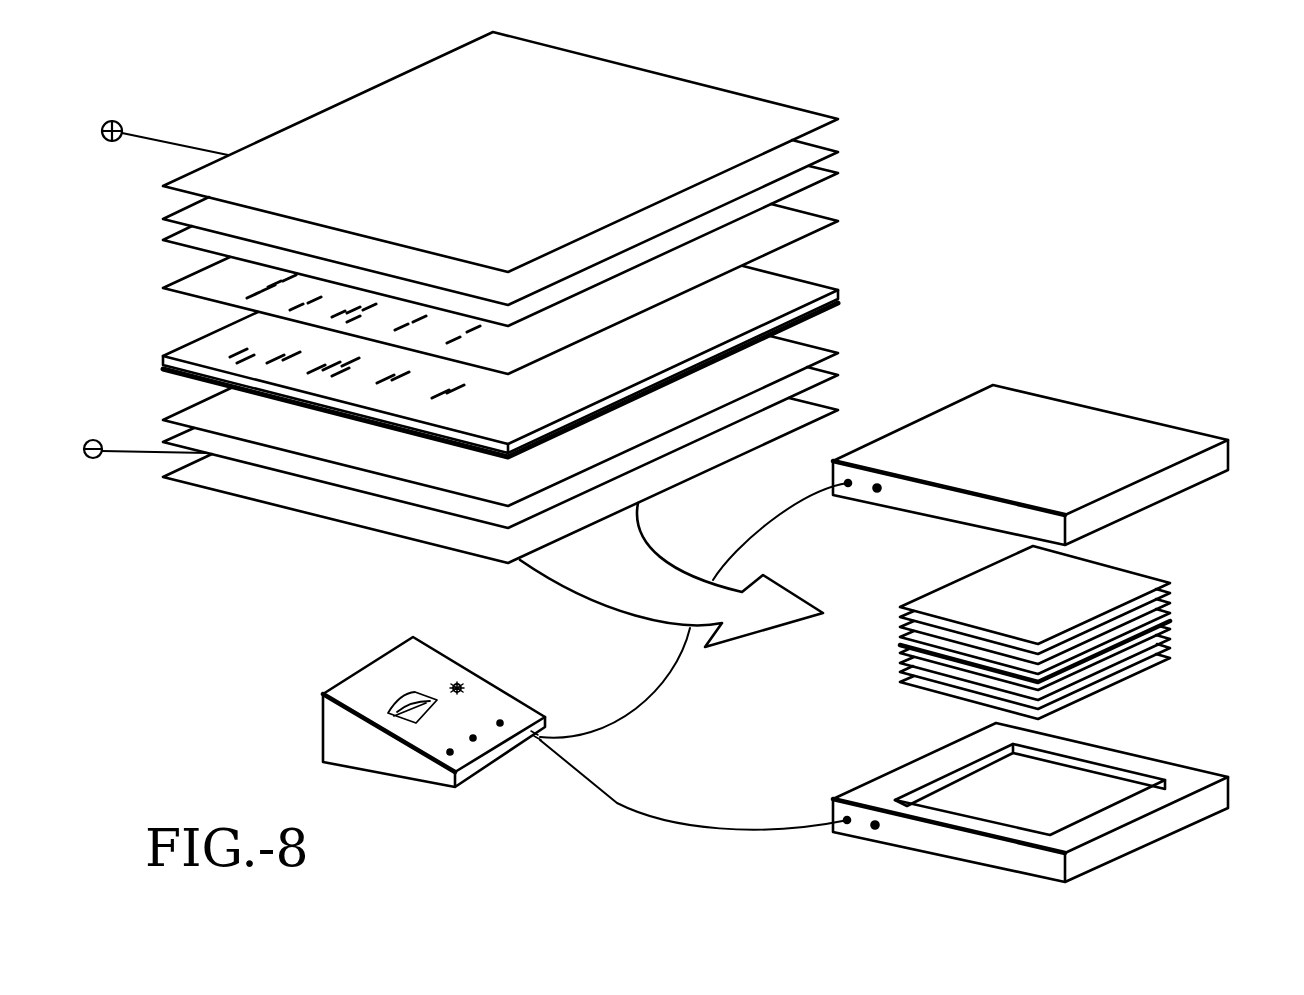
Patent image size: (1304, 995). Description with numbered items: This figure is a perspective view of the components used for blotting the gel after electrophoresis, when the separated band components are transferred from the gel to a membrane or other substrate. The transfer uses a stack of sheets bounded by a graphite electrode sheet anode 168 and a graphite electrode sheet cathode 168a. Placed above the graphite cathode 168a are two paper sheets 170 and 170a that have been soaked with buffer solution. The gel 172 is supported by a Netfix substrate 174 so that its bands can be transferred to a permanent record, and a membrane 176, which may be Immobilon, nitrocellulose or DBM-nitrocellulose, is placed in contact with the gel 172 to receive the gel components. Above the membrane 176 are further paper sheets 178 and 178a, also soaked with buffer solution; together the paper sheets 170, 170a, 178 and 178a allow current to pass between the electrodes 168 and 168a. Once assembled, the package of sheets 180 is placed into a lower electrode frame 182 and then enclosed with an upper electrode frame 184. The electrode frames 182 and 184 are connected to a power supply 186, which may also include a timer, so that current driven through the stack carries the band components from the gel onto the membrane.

The graphite electrode sheet anode 168 is at (645, 118).
The graphite electrode sheet cathode 168a is at (348, 509).
The paper sheet 170 is at (790, 355).
The paper sheet 170a is at (813, 376).
The gel 172 is at (290, 309).
The Netfix substrate 174 is at (840, 305).
The membrane 176 is at (788, 230).
The paper sheet 178 is at (800, 155).
The paper sheet 178a is at (808, 177).
The package of sheets 180 is at (1098, 592).
The lower electrode frame 182 is at (1180, 785).
The upper electrode frame 184 is at (1158, 488).
The power supply 186 is at (397, 688).